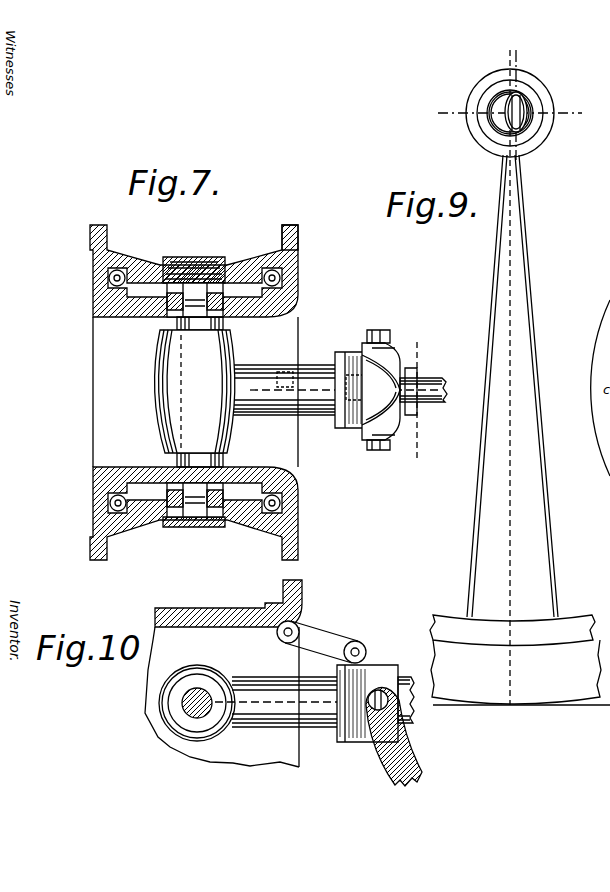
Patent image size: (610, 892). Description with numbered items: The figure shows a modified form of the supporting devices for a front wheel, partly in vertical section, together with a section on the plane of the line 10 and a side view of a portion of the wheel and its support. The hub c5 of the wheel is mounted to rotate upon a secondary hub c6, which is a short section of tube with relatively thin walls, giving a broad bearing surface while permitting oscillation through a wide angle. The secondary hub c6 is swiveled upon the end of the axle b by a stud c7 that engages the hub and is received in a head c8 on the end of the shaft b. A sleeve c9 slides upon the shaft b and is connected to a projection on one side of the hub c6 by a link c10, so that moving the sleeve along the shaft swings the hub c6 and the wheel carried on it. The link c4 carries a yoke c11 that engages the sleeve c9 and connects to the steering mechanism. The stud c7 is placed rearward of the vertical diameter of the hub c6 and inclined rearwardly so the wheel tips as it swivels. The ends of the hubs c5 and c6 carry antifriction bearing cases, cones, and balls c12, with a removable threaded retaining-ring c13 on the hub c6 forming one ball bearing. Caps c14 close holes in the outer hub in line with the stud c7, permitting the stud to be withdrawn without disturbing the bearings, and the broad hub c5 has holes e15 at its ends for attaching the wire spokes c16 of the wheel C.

In FIG. 7, the link c4 is at (432, 396).
In FIG. 10, the link c4 is at (412, 776).
In FIG. 7, the hub c5 is at (299, 256).
In FIG. 9, the hub c5 is at (547, 102).
In FIG. 7, the secondary hub c6 is at (293, 311).
In FIG. 9, the secondary hub c6 is at (532, 127).
In FIG. 10, the secondary hub c6 is at (300, 602).
In FIG. 7, the stud c7 is at (200, 322).
In FIG. 10, the stud c7 is at (210, 693).
In FIG. 7, the head c8 is at (195, 391).
In FIG. 9, the head c8 is at (525, 100).
In FIG. 10, the head c8 is at (195, 673).
In FIG. 7, the sleeve c9 is at (352, 351).
In FIG. 10, the sleeve c9 is at (378, 667).
In FIG. 10, the link c10 is at (331, 641).
In FIG. 7, the yoke c11 is at (386, 345).
In FIG. 10, the yoke c11 is at (401, 719).
In FIG. 7, the balls c12 is at (93, 283).
In FIG. 7, the threaded retaining-ring c13 is at (93, 300).
In FIG. 7, the caps c14 is at (186, 258).
In FIG. 7, the holes e15 is at (290, 243).
In FIG. 9, the spokes c16 is at (496, 273).
In FIG. 7, the axle b is at (316, 405).
In FIG. 10, the axle b is at (321, 718).
In FIG. 9, the wheel rim C is at (520, 660).
In FIG. 7, the line 10 10 is at (420, 404).